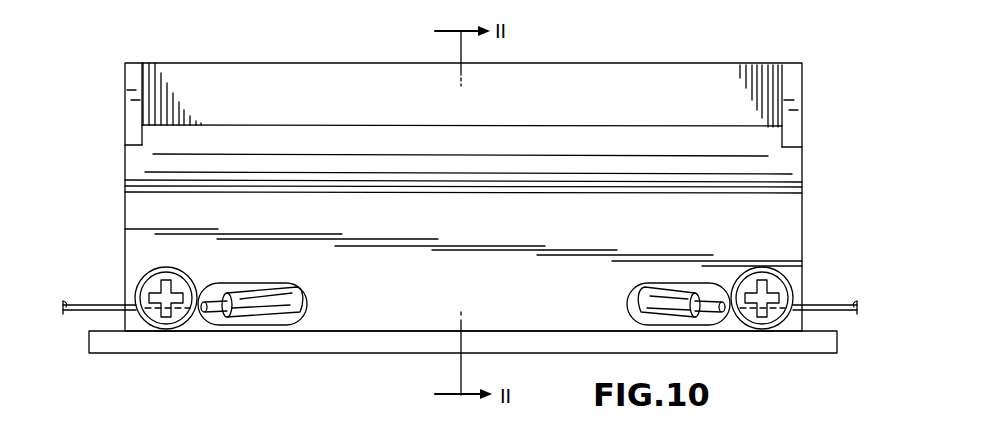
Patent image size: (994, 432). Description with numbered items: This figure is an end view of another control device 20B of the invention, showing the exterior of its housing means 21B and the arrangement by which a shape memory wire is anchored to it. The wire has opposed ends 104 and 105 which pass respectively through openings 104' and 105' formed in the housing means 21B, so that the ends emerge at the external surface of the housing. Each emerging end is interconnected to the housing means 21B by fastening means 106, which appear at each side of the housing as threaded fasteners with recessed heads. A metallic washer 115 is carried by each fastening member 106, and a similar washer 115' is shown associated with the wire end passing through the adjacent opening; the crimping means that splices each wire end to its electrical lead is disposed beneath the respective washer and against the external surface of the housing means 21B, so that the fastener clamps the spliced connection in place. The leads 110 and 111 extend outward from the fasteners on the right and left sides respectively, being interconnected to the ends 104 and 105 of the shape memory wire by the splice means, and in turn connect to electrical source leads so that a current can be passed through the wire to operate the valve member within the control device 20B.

The control device 20B is at (471, 176).
The housing means 21B is at (795, 215).
The metallic washer 115 is at (469, 273).
The fastening means 106 is at (140, 290).
The lead 111 is at (62, 313).
The lead 110 is at (849, 313).
The opening 105' is at (262, 289).
The end of shape memory wire 105 is at (226, 341).
The metallic washer 115' is at (461, 330).
The opening 104' is at (678, 273).
The end of shape memory wire 104 is at (719, 342).